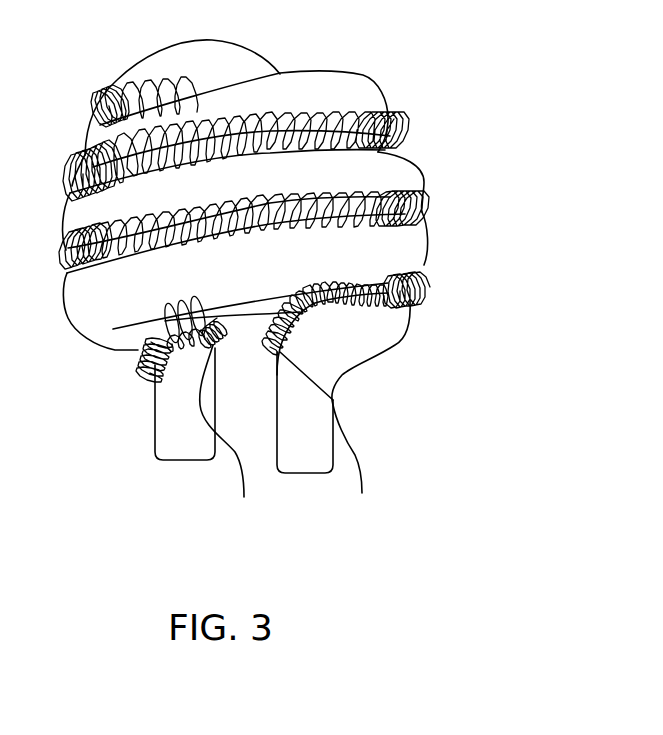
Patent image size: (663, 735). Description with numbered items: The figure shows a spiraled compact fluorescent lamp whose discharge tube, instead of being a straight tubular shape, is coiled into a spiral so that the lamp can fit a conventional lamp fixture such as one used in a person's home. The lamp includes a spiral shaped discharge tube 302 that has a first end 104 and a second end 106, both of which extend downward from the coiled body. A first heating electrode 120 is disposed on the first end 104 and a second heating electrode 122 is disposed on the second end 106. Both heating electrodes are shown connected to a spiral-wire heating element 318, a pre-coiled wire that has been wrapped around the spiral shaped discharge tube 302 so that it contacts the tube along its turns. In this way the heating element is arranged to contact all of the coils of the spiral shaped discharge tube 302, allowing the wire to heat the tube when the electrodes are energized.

The spiral shaped discharge tube 302 is at (360, 97).
The spiral-wire heating element 318 is at (425, 281).
The first end 104 is at (190, 472).
The second end 106 is at (291, 487).
The first heating electrode 120 is at (240, 467).
The second heating electrode 122 is at (358, 445).